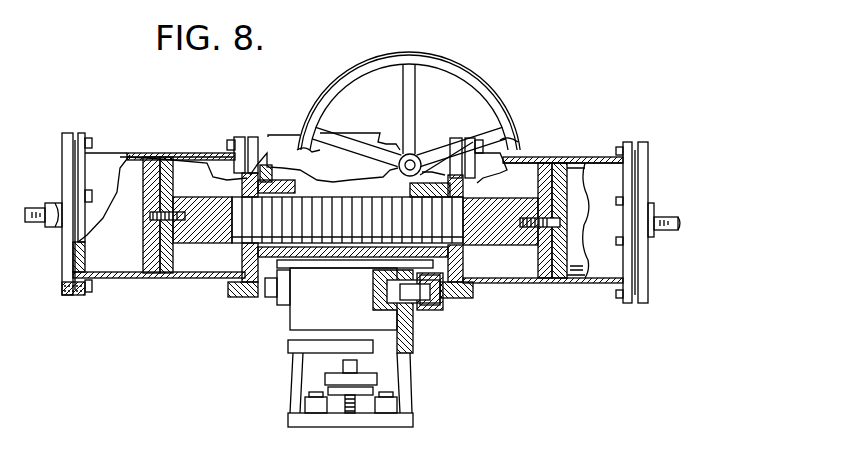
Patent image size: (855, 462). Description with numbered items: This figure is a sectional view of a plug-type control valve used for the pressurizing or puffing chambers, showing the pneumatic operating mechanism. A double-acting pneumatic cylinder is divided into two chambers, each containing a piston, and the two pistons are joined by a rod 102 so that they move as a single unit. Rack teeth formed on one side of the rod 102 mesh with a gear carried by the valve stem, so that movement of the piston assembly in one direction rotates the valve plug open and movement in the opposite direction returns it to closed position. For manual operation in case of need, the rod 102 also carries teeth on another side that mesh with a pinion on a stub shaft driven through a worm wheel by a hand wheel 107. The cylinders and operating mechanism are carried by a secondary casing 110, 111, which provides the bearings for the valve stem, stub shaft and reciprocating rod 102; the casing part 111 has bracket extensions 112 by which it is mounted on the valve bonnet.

The rod 102 is at (495, 237).
The hand wheel 107 is at (490, 92).
The secondary casing 110 is at (283, 140).
The casing part 111 is at (412, 323).
The bracket extensions 112 is at (407, 420).